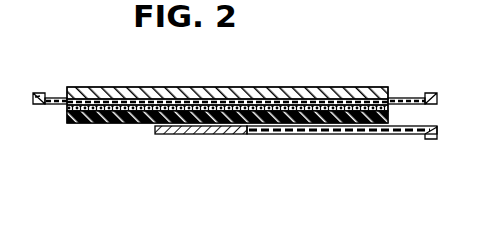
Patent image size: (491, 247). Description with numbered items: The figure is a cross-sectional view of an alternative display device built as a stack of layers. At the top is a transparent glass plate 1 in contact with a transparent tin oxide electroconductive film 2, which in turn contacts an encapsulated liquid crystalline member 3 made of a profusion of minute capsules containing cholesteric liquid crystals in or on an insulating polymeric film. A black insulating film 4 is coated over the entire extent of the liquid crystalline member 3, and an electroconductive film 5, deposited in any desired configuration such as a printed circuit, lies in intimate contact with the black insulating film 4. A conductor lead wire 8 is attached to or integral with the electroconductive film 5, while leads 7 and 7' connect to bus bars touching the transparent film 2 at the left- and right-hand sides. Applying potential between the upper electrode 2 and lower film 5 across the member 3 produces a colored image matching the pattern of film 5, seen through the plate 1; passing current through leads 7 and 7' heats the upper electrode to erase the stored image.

The transparent glass plate 1 is at (258, 90).
The transparent electroconductive film 2 is at (92, 100).
The encapsulated liquid crystalline member 3 is at (70, 108).
The black insulating film 4 is at (388, 113).
The electroconductive film 5 is at (177, 134).
The lead 7 is at (43, 87).
The lead 7' is at (412, 85).
The conductor lead wire 8 is at (318, 135).